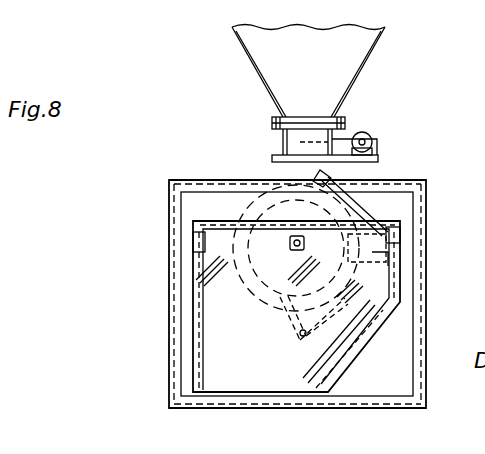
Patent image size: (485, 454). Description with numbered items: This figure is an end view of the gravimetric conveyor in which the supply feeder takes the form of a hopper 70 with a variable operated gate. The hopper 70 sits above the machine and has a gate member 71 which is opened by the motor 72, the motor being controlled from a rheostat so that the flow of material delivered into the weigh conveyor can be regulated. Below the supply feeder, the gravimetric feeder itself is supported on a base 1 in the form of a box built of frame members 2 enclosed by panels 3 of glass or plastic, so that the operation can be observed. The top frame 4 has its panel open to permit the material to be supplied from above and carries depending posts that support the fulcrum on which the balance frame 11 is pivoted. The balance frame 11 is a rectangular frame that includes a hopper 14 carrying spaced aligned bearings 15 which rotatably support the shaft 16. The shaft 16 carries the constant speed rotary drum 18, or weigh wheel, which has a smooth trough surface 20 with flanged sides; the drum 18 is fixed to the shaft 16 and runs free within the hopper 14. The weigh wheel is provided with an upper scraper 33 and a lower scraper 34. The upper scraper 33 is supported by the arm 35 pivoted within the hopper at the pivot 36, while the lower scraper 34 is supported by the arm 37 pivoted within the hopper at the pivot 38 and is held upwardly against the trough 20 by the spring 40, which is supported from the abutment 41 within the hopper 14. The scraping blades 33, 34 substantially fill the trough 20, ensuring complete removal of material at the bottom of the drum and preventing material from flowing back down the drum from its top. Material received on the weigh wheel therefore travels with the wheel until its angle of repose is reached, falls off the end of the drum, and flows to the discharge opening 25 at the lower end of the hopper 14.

The base 1 is at (178, 3).
The frame members 2 is at (178, 214).
The panels 3 is at (217, 317).
The top frame 4 is at (198, 186).
The balance frame 11 is at (195, 247).
The hopper 14 is at (283, 357).
The bearings 15 is at (291, 240).
The shaft 16 is at (292, 247).
The rotary drum 18 is at (313, 180).
The trough surface 20 is at (250, 208).
The discharge opening 25 is at (250, 0).
The upper scraper 33 is at (319, 186).
The lower scraper 34 is at (294, 328).
The arm 35 is at (360, 211).
The pivot 36 is at (394, 235).
The arm 37 is at (343, 335).
The pivot 38 is at (386, 259).
The spring 40 is at (352, 264).
The abutment 41 is at (348, 236).
The hopper 70 is at (352, 67).
The gate member 71 is at (295, 142).
The motor 72 is at (360, 134).